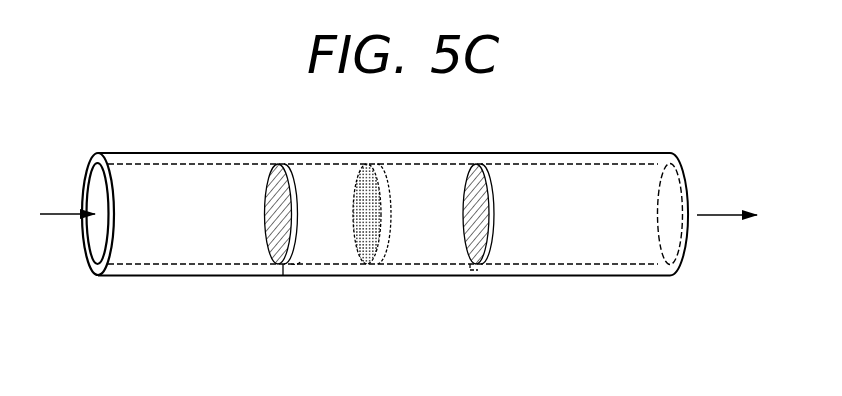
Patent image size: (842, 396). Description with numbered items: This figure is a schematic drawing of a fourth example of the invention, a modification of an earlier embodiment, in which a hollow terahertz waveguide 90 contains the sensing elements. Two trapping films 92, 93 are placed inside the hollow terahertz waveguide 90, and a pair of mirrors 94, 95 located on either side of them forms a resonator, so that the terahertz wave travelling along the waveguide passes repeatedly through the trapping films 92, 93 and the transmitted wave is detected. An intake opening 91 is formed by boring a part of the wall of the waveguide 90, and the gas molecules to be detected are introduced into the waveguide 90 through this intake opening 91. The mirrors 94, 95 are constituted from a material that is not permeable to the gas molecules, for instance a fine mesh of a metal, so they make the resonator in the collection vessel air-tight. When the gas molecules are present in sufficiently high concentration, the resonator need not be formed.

The hollow terahertz waveguide 90 is at (560, 153).
The intake opening 91 is at (402, 276).
The trapping film 92 is at (372, 216).
The trapping film 93 is at (391, 218).
The mirror 94 is at (268, 226).
The mirror 95 is at (494, 229).